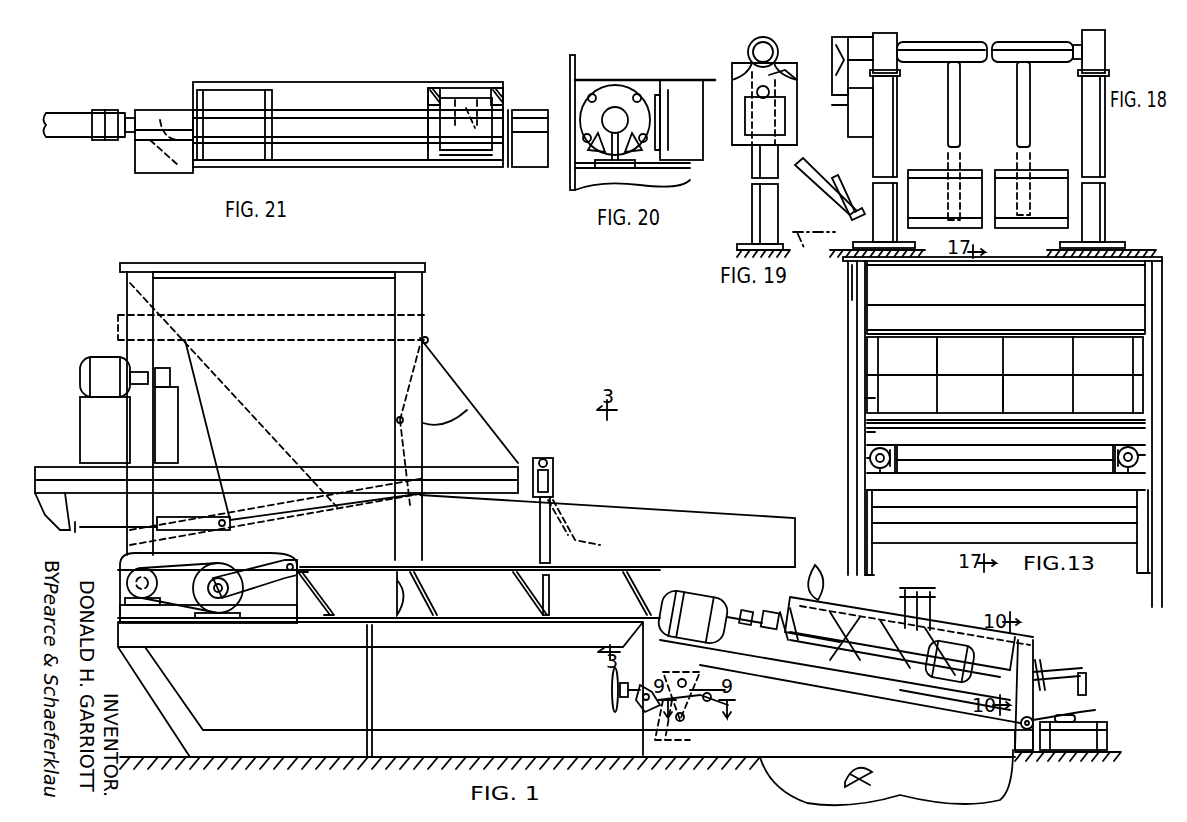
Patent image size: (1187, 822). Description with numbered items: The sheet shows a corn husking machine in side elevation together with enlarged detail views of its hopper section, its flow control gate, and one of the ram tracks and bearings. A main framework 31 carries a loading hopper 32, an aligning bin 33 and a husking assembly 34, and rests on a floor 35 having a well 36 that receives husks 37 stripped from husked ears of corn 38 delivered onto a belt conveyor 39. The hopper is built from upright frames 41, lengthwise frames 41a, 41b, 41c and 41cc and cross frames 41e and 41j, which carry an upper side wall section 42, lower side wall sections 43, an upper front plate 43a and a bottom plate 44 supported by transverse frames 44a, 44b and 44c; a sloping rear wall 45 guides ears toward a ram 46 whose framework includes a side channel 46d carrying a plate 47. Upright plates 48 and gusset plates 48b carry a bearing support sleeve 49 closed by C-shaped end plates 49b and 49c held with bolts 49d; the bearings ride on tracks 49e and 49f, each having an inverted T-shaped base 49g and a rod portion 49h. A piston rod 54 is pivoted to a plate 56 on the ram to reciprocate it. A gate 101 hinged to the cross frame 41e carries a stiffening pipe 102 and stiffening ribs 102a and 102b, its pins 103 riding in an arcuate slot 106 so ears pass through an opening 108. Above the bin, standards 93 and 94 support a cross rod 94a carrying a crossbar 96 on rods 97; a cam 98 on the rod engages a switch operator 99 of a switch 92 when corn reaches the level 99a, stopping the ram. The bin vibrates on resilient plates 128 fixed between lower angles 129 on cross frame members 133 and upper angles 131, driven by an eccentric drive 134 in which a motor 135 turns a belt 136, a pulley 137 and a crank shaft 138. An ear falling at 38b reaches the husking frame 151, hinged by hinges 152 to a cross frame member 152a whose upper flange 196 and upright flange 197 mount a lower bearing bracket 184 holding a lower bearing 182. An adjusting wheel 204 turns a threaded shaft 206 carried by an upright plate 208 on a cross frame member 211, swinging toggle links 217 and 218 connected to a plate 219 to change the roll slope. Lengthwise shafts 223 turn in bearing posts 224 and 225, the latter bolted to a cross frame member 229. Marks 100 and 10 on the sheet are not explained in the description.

In FIG. 1, the main framework 31 is at (375, 665).
In FIG. 13, the loading hopper 32 is at (863, 278).
In FIG. 1, the loading hopper 32 is at (437, 372).
In FIG. 1, the aligning bin 33 is at (665, 520).
In FIG. 1, the husking assembly 34 is at (853, 673).
In FIG. 1, the floor 35 is at (170, 753).
In FIG. 1, the well 36 is at (1017, 783).
In FIG. 1, the husks 37 is at (860, 775).
In FIG. 1, the husked ears of corn 38 is at (1083, 720).
In FIG. 1, the falling ear of corn 38b is at (815, 587).
In FIG. 1, the belt conveyor 39 is at (1107, 727).
In FIG. 13, the upright frames 41 is at (850, 565).
In FIG. 1, the upright frames 41 is at (143, 283).
In FIG. 1, the lengthwise frame 41a is at (283, 327).
In FIG. 13, the lengthwise frame 41b is at (872, 562).
In FIG. 13, the lengthwise frame 41c is at (868, 453).
In FIG. 1, the lengthwise frame 41c is at (188, 477).
In FIG. 1, the lengthwise frame 41cc is at (310, 272).
In FIG. 13, the cross frame 41e is at (1017, 315).
In FIG. 13, the cross frame 41j is at (927, 263).
In FIG. 1, the upper side wall section 42 is at (228, 285).
In FIG. 20, the lower side wall section 43 is at (575, 58).
In FIG. 13, the lower side wall section 43 is at (868, 434).
In FIG. 1, the lower side wall section 43 is at (467, 432).
In FIG. 13, the upper front plate 43a is at (872, 300).
In FIG. 20, the bottom plate 44 is at (673, 170).
In FIG. 13, the transverse frame 44a is at (873, 537).
In FIG. 13, the transverse frame 44b is at (872, 513).
In FIG. 20, the transverse frame 44c is at (590, 168).
In FIG. 13, the transverse frame 44c is at (870, 477).
In FIG. 1, the sloping rear wall 45 is at (277, 423).
In FIG. 20, the ram 46 is at (683, 92).
In FIG. 13, the ram 46 is at (985, 463).
In FIG. 21, the side channel 46d is at (357, 95).
In FIG. 21, the plate 47 is at (313, 83).
In FIG. 20, the plate 47 is at (712, 87).
In FIG. 13, the plate 47 is at (933, 447).
In FIG. 21, the upright plate 48 is at (223, 158).
In FIG. 20, the upright plate 48 is at (665, 88).
In FIG. 21, the gusset plate 48b is at (477, 147).
In FIG. 20, the gusset plate 48b is at (655, 98).
In FIG. 21, the bearing support sleeve 49 is at (447, 153).
In FIG. 21, the C-shaped end plate 49b is at (493, 87).
In FIG. 21, the C-shaped end plate 49c is at (503, 83).
In FIG. 20, the C-shaped end plate 49c is at (608, 97).
In FIG. 21, the bolts 49d is at (428, 100).
In FIG. 20, the track 49e is at (633, 157).
In FIG. 13, the track 49e is at (872, 432).
In FIG. 13, the track 49f is at (1115, 459).
In FIG. 21, the base 49g is at (545, 170).
In FIG. 20, the base 49g is at (590, 185).
In FIG. 20, the rod portion 49h is at (610, 120).
In FIG. 21, the piston rod 54 is at (65, 118).
In FIG. 21, the plate 56 is at (162, 112).
In FIG. 19, the switch 92 is at (755, 127).
In FIG. 18, the switch 92 is at (852, 117).
In FIG. 1, the switch 92 is at (552, 482).
In FIG. 19, the standard 93 is at (757, 207).
In FIG. 18, the standard 93 is at (878, 153).
In FIG. 1, the standard 93 is at (547, 527).
In FIG. 18, the standard 94 is at (1088, 132).
In FIG. 19, the cross rod 94a is at (765, 53).
In FIG. 18, the cross rod 94a is at (1052, 55).
In FIG. 19, the crossbar 96 is at (827, 207).
In FIG. 18, the crossbar 96 is at (1003, 183).
In FIG. 1, the crossbar 96 is at (600, 546).
In FIG. 19, the rods 97 is at (800, 177).
In FIG. 18, the rods 97 is at (950, 115).
In FIG. 19, the cam 98 is at (745, 63).
In FIG. 18, the cam 98 is at (833, 46).
In FIG. 19, the switch operator 99 is at (782, 72).
In FIG. 19, the dot-dash line level 99a is at (800, 236).
In FIG. 1, the link 100 is at (1047, 682).
In FIG. 13, the gate 101 is at (880, 357).
In FIG. 13, the stiffening pipe 102 is at (958, 417).
In FIG. 13, the stiffening rib 102a is at (938, 357).
In FIG. 13, the stiffening rib 102b is at (1007, 377).
In FIG. 13, the pins 103 is at (865, 423).
In FIG. 1, the pins 103 is at (398, 421).
In FIG. 1, the arcuate slot 106 is at (452, 413).
In FIG. 13, the opening 108 is at (850, 400).
In FIG. 1, the resilient plates 128 is at (310, 595).
In FIG. 1, the lower angle 129 is at (525, 607).
In FIG. 1, the upper angle 131 is at (642, 575).
In FIG. 1, the cross frame members 133 is at (447, 645).
In FIG. 1, the eccentric drive 134 is at (127, 563).
In FIG. 1, the motor 135 is at (147, 593).
In FIG. 1, the belt 136 is at (183, 607).
In FIG. 1, the pulley 137 is at (197, 603).
In FIG. 1, the crank shaft 138 is at (243, 607).
In FIG. 1, the frame 151 is at (867, 687).
In FIG. 1, the hinges 152 is at (1027, 723).
In FIG. 1, the cross frame member 152a is at (1090, 700).
In FIG. 1, the lower bearing 182 is at (1087, 683).
In FIG. 1, the lower bearing bracket 184 is at (1035, 670).
In FIG. 1, the upper flange 196 is at (1040, 678).
In FIG. 1, the upright flange 197 is at (973, 717).
In FIG. 1, the adjusting wheel 204 is at (612, 701).
In FIG. 1, the threaded shaft 206 is at (737, 700).
In FIG. 1, the upright plate 208 is at (643, 717).
In FIG. 1, the cross frame member 211 is at (690, 739).
In FIG. 1, the toggle link 217 is at (703, 687).
In FIG. 1, the toggle link 218 is at (723, 720).
In FIG. 1, the plate 219 is at (612, 679).
In FIG. 1, the lengthwise shaft 223 is at (862, 603).
In FIG. 1, the bearing post 224 is at (1030, 657).
In FIG. 1, the bearing post 225 is at (788, 617).
In FIG. 1, the cross frame member 229 is at (840, 697).
In FIG. 1, the motor 10 is at (950, 661).